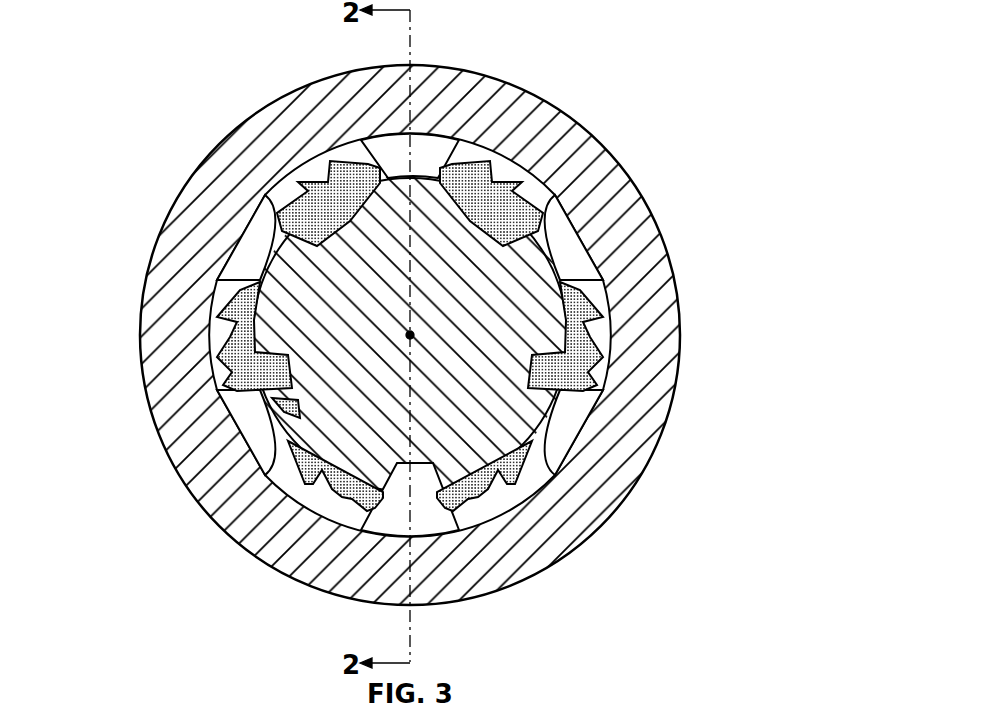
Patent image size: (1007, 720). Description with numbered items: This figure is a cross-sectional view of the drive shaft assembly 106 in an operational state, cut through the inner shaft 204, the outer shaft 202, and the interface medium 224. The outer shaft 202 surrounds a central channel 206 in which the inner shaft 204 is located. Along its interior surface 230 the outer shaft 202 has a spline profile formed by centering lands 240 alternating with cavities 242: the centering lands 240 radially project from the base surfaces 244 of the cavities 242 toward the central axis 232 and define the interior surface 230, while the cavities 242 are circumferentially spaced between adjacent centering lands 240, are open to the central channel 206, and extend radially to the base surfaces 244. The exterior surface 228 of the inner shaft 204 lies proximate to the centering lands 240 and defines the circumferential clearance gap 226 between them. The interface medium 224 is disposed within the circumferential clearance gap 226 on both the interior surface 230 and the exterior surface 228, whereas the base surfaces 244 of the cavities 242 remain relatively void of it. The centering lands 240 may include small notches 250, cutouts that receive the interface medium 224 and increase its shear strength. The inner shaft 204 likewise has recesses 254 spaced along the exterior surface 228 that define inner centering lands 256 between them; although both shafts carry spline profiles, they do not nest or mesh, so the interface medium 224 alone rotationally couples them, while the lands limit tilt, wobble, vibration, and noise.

The drive shaft assembly 106 is at (138, 90).
The outer shaft 202 is at (300, 128).
The inner shaft 204 is at (322, 292).
The central channel 206 is at (566, 409).
The interface medium 224 is at (320, 213).
The circumferential clearance gap 226 is at (548, 470).
The exterior surface 228 is at (585, 352).
The interior surface 230 is at (607, 390).
The central axis 232 is at (548, 262).
The centering lands 240 is at (512, 183).
The cavities 242 is at (438, 138).
The base surfaces 244 is at (367, 134).
The notches 250 is at (602, 367).
The recesses 254 is at (287, 467).
The centering lands 256 is at (300, 500).